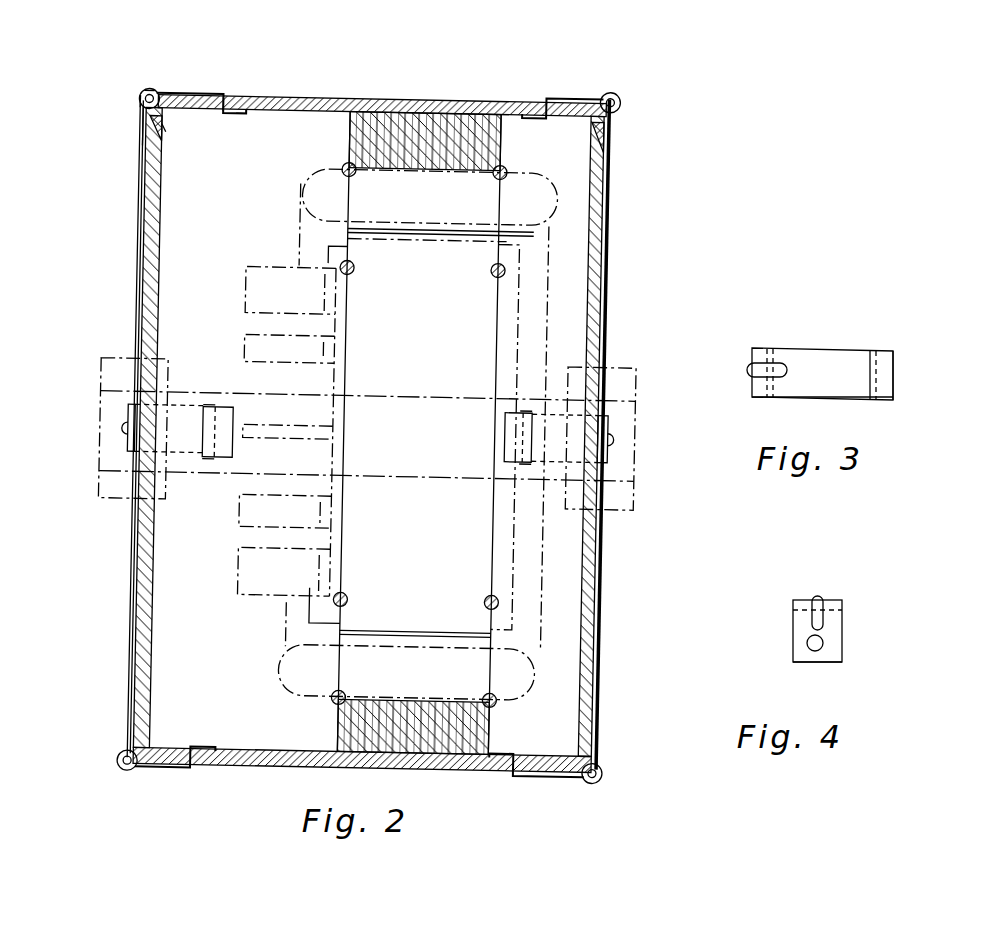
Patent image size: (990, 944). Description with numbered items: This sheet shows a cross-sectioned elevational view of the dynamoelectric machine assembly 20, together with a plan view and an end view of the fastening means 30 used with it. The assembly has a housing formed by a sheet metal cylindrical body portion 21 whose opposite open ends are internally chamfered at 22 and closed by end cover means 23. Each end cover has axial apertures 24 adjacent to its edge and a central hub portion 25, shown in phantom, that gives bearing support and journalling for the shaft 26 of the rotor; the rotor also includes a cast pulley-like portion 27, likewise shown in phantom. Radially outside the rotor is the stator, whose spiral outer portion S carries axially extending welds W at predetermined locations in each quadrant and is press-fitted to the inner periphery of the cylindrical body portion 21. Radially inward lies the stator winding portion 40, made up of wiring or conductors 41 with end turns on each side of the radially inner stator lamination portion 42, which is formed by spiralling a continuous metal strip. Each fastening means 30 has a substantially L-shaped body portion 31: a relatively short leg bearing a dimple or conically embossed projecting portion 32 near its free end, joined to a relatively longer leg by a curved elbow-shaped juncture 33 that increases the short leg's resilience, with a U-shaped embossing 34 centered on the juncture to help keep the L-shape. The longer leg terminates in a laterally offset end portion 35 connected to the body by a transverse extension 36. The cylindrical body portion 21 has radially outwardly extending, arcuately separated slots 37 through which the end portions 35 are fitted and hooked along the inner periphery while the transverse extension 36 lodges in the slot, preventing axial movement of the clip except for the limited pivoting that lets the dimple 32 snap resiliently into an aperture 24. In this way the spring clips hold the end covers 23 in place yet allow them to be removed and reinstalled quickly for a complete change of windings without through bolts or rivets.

In FIG. 2, the dynamoelectric machine assembly 20 is at (340, 98).
In FIG. 2, the cylindrical body portion 21 is at (468, 105).
In FIG. 2, the internal chamfer 22 is at (135, 260).
In FIG. 2, the end cover means 23 is at (148, 208).
In FIG. 2, the axial apertures 24 is at (157, 138).
In FIG. 2, the central hub portion 25 is at (108, 365).
In FIG. 2, the shaft 26 is at (243, 480).
In FIG. 2, the cast pulley-like portion 27 is at (300, 250).
In FIG. 2, the fastening means 30 is at (200, 97).
In FIG. 3, the fastening means 30 is at (815, 348).
In FIG. 4, the fastening means 30 is at (793, 630).
In FIG. 2, the L-shaped body portion 31 is at (147, 132).
In FIG. 3, the L-shaped body portion 31 is at (792, 400).
In FIG. 4, the L-shaped body portion 31 is at (840, 628).
In FIG. 2, the dimple or conically embossed projecting portion 32 is at (160, 135).
In FIG. 4, the dimple or conically embossed projecting portion 32 is at (820, 645).
In FIG. 2, the elbow-shaped juncture 33 is at (135, 100).
In FIG. 3, the elbow-shaped juncture 33 is at (760, 348).
In FIG. 4, the elbow-shaped juncture 33 is at (835, 602).
In FIG. 2, the U-shaped embossing 34 is at (143, 90).
In FIG. 3, the U-shaped embossing 34 is at (745, 370).
In FIG. 4, the U-shaped embossing 34 is at (818, 597).
In FIG. 2, the laterally offset end portion 35 is at (240, 115).
In FIG. 3, the laterally offset end portion 35 is at (885, 368).
In FIG. 2, the transverse extension 36 is at (213, 106).
In FIG. 3, the transverse extension 36 is at (873, 356).
In FIG. 2, the slots 37 is at (222, 100).
In FIG. 2, the stator winding portion 40 is at (540, 223).
In FIG. 2, the wiring or conductors 41 is at (300, 196).
In FIG. 2, the radially inner stator lamination portion 42 is at (345, 636).
In FIG. 2, the spiral outer portion S is at (406, 125).
In FIG. 2, the welds W is at (498, 268).